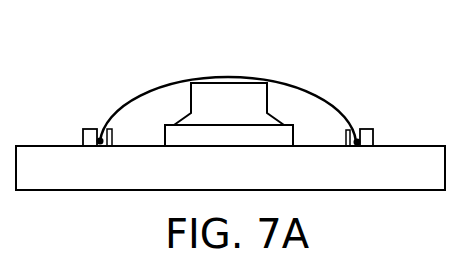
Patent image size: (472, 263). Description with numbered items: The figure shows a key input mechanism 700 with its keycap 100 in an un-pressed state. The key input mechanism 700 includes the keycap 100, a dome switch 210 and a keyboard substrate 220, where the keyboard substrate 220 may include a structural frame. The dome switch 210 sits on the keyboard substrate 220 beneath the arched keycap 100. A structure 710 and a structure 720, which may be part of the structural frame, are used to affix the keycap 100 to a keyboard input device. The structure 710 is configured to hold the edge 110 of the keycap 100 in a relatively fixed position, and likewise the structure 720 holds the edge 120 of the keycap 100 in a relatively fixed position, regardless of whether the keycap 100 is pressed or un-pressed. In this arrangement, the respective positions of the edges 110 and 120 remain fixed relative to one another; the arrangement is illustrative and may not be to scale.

The key input mechanism 700 is at (313, 62).
The keycap 100 is at (165, 85).
The structure 710 is at (88, 128).
The structure 720 is at (368, 128).
The edge 110 is at (100, 146).
The edge 120 is at (358, 148).
The dome switch 210 is at (268, 101).
The keyboard substrate 220 is at (433, 178).